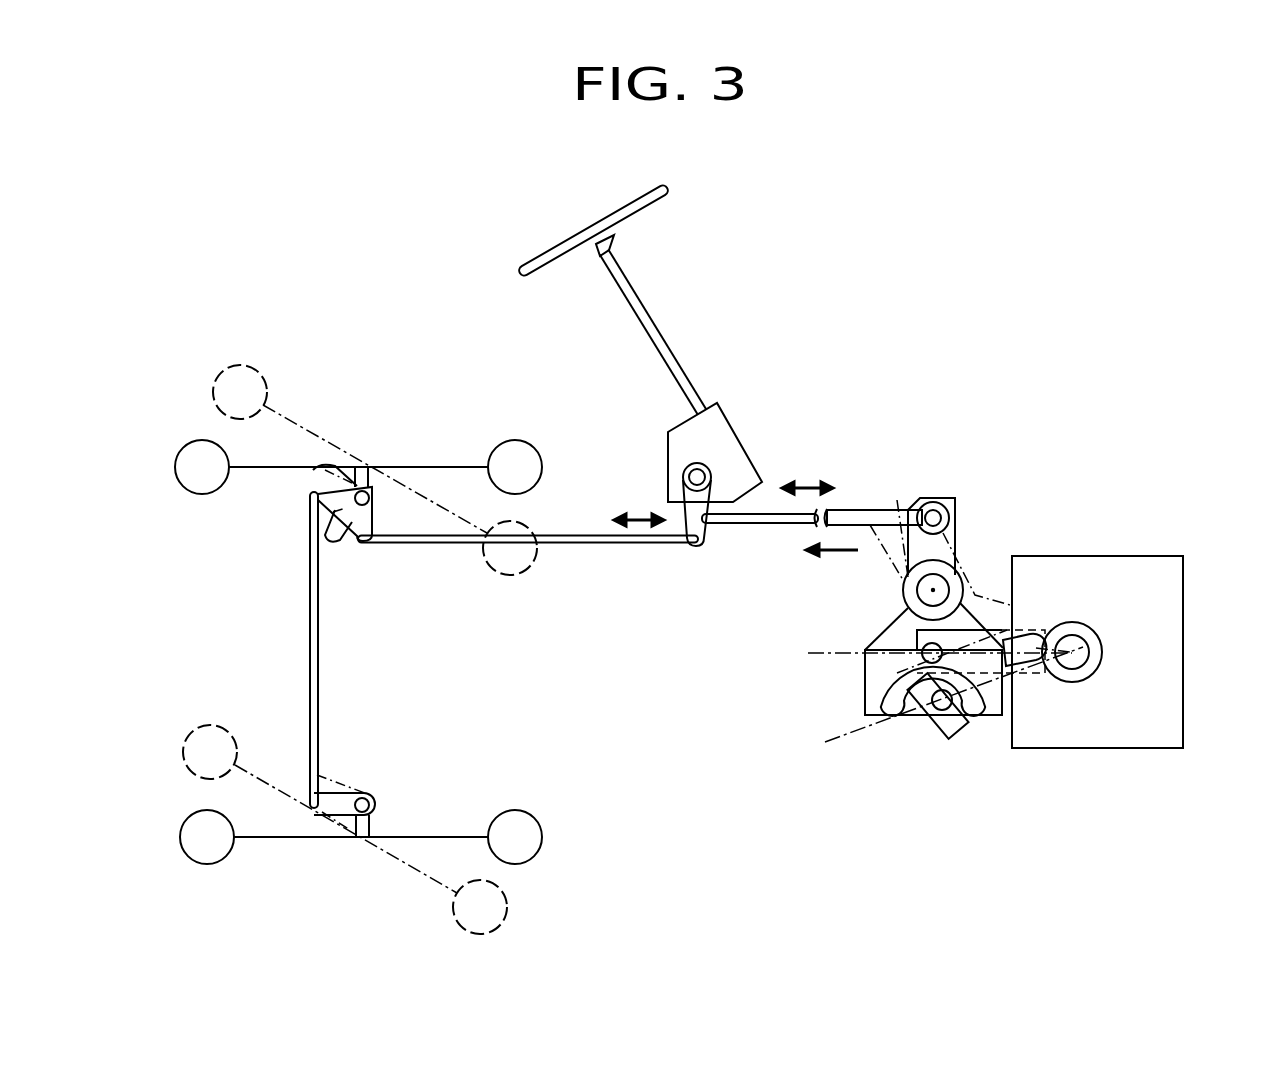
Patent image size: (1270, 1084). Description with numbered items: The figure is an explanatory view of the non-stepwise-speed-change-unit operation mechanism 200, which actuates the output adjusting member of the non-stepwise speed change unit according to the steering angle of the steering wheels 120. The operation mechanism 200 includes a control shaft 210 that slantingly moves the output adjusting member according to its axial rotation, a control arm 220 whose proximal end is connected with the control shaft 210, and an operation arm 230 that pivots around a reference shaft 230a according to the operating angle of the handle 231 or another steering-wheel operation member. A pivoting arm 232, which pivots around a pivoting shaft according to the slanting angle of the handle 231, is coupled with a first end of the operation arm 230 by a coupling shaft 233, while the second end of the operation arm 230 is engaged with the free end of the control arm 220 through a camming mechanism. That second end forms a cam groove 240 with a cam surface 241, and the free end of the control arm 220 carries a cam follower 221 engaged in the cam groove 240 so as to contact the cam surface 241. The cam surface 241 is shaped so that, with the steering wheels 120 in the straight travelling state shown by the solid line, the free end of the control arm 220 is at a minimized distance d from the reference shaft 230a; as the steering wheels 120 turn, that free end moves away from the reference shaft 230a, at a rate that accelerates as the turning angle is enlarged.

The steering wheels 120 is at (196, 450).
The non-stepwise-speed-change-unit operation mechanism 200 is at (916, 328).
The control shaft 210 is at (1090, 650).
The control arm 220 is at (1030, 638).
The cam follower 221 is at (905, 640).
The operation arm 230 is at (952, 543).
The reference shaft 230a is at (937, 586).
The handle 231 is at (628, 212).
The pivoting arm 232 is at (690, 498).
The coupling shaft 233 is at (853, 515).
The cam groove 240 is at (877, 707).
The cam surface 241 is at (883, 690).
The distance d is at (1130, 557).